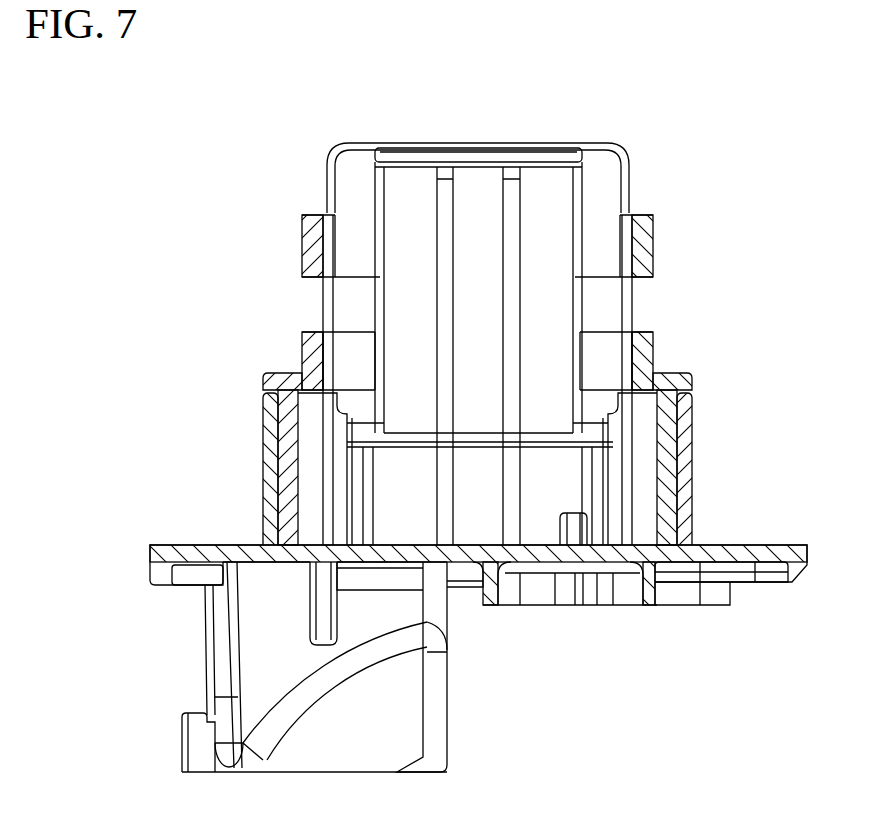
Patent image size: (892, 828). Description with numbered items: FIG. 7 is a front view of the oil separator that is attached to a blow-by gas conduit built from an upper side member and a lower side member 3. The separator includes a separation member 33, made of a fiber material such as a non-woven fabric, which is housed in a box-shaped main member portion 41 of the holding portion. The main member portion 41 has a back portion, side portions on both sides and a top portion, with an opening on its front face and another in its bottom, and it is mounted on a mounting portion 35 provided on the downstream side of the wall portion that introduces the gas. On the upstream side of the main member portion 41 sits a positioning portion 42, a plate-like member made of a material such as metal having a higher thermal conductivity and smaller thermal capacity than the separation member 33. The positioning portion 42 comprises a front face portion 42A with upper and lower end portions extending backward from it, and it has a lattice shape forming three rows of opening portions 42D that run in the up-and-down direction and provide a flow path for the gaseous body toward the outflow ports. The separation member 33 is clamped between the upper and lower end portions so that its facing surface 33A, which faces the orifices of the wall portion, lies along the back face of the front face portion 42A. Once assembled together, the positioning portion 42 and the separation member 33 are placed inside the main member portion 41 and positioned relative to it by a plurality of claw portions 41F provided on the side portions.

The lower side member 3 is at (807, 568).
The separation member 33 is at (408, 370).
The facing surface 33A is at (477, 373).
The mounting portion 35 is at (705, 470).
The main member portion 41 is at (308, 253).
The claw portions 41F is at (358, 240).
The positioning portion 42 is at (524, 142).
The front face portion 42A is at (513, 237).
The opening portions 42D is at (388, 256).